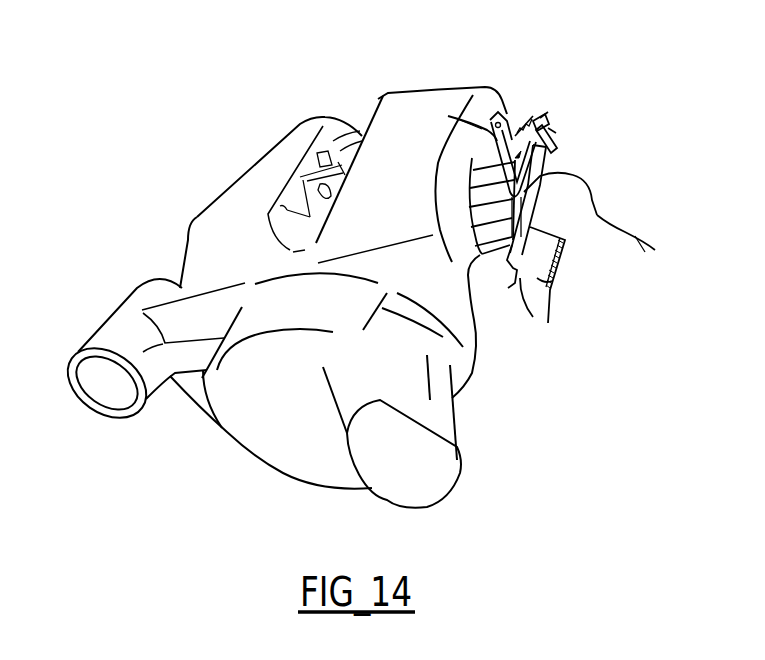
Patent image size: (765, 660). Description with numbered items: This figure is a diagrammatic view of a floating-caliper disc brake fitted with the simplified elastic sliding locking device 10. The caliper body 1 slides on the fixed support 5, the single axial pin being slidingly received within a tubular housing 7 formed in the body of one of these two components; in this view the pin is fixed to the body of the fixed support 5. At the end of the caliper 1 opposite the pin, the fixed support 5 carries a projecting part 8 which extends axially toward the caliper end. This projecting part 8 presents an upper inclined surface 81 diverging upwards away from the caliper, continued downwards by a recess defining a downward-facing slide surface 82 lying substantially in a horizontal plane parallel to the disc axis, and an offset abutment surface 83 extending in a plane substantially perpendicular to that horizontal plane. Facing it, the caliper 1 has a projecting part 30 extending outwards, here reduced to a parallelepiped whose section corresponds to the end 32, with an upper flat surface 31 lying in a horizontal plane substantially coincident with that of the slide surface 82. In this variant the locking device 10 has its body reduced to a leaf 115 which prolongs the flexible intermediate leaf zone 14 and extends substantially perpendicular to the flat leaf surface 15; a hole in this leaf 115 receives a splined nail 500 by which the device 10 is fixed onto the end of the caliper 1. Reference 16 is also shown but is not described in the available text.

The caliper body 1 is at (438, 88).
The leaf 115 is at (458, 117).
The tubular housing 7 is at (110, 327).
The projecting part of the caliper 30 is at (478, 169).
The splined nail 500 is at (513, 122).
The upper flat surface 31 is at (512, 132).
The locking bar 16 is at (540, 112).
The elastic sliding locking device 10 is at (552, 110).
The flat leaf surface 15 is at (550, 120).
The end 32 is at (557, 131).
The flexible intermediate leaf zone 14 is at (537, 165).
The projecting part of the support 8 is at (578, 261).
The upper inclined surface 81 is at (537, 207).
The slide surface 82 is at (508, 286).
The offset abutment surface 83 is at (536, 314).
The fixed support 5 is at (648, 242).